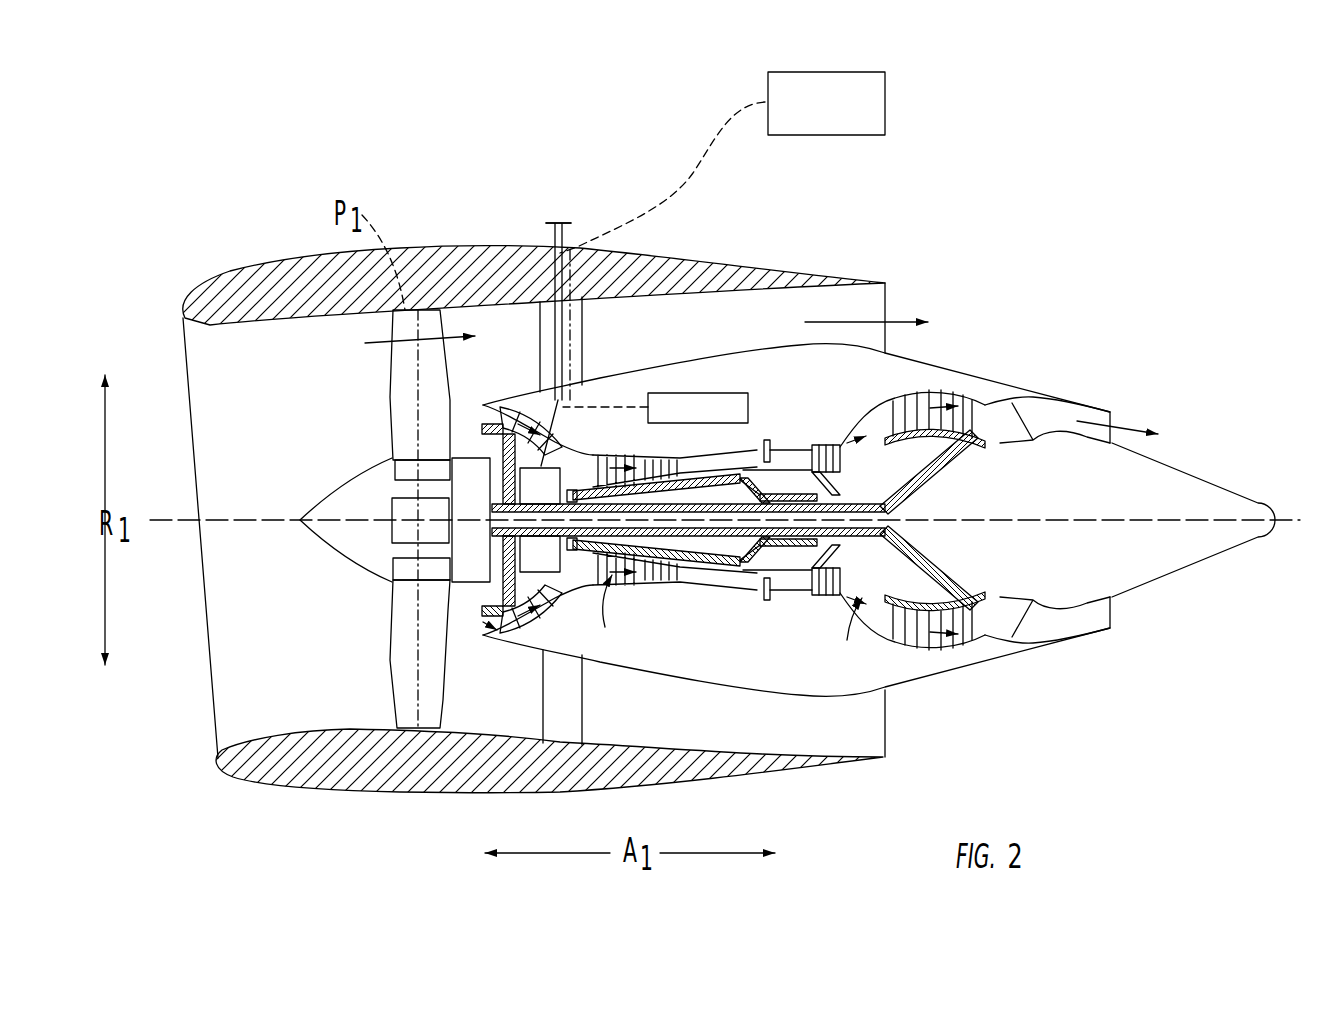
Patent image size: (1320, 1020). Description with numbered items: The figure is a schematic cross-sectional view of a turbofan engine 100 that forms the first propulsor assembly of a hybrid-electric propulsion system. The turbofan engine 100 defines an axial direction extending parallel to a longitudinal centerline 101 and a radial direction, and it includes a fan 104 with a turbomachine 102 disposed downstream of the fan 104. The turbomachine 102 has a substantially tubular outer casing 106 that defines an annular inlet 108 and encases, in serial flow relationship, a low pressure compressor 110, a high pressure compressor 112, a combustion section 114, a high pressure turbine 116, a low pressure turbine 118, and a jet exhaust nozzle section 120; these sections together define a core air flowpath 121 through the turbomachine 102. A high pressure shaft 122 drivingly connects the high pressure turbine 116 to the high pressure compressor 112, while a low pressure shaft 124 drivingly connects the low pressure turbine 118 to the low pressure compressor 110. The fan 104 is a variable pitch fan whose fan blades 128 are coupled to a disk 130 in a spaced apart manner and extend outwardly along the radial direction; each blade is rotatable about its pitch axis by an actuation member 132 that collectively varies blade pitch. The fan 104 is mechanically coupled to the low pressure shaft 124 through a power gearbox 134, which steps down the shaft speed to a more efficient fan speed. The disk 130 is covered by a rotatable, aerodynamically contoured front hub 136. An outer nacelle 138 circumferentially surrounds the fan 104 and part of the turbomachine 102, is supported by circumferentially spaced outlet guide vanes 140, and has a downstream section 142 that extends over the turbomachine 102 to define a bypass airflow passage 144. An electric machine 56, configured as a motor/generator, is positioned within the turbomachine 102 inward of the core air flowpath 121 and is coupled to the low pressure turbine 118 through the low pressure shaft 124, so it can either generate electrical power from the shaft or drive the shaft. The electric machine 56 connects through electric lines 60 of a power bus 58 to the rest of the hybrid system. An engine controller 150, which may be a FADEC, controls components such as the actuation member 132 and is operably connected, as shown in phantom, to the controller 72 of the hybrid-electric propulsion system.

The turbofan engine 100 is at (980, 277).
The longitudinal centerline 101 is at (1052, 520).
The turbomachine 102 is at (703, 343).
The fan 104 is at (305, 345).
The outer casing 106 is at (748, 687).
The annular inlet 108 is at (470, 607).
The low pressure compressor 110 is at (528, 645).
The high pressure compressor 112 is at (625, 585).
The combustion section 114 is at (773, 580).
The high pressure turbine 116 is at (880, 586).
The low pressure turbine 118 is at (968, 643).
The jet exhaust nozzle section 120 is at (1030, 625).
The core air flowpath 121 is at (729, 626).
The high pressure shaft 122 is at (787, 482).
The low pressure shaft 124 is at (863, 497).
The fan blades 128 is at (392, 665).
The disk 130 is at (413, 472).
The actuation member 132 is at (392, 506).
The power gearbox 134 is at (453, 458).
The front hub 136 is at (315, 530).
The outer nacelle 138 is at (442, 793).
The outlet guide vanes 140 is at (585, 332).
The downstream section 142 is at (812, 272).
The bypass airflow passage 144 is at (732, 341).
The controller 150 is at (733, 393).
The electric machine 56 is at (547, 572).
The power bus 58 is at (543, 228).
The electric lines 60 is at (563, 240).
The controller 72 is at (812, 124).